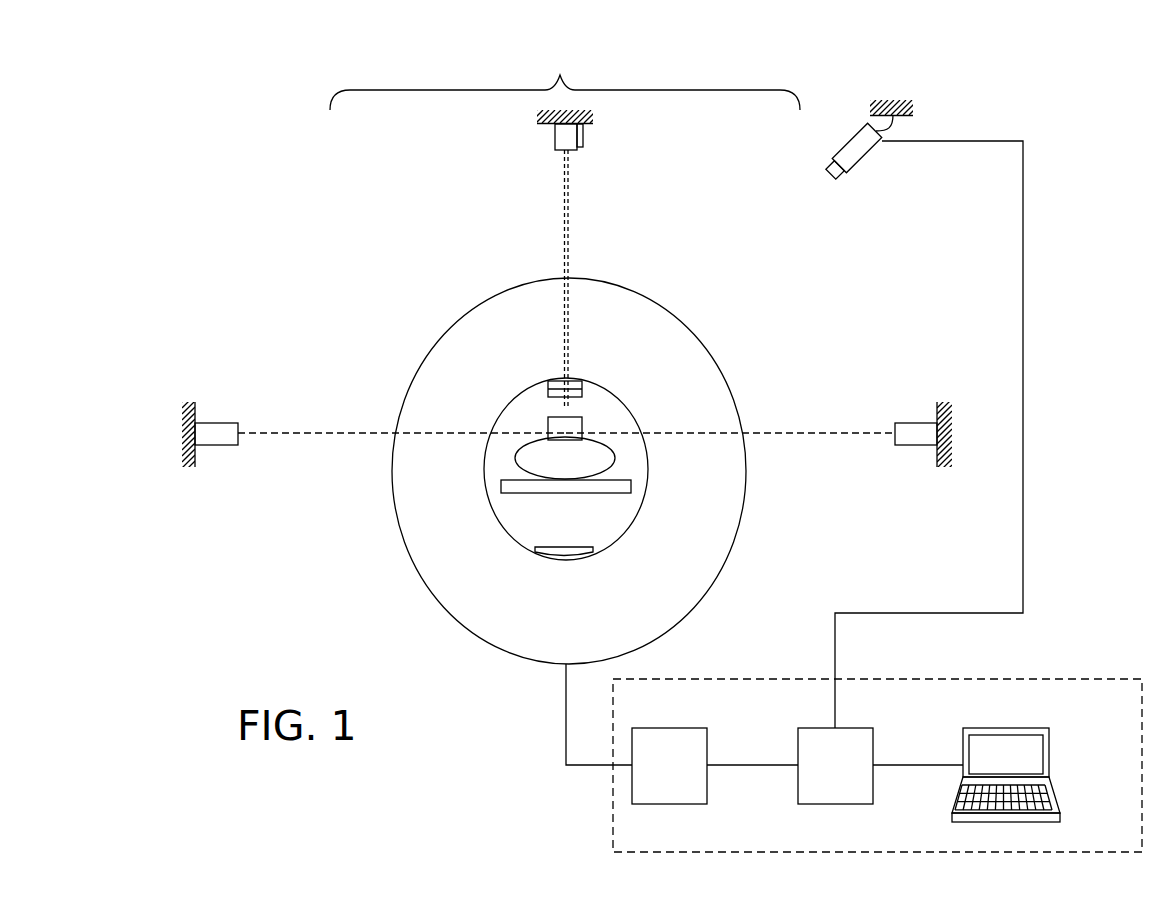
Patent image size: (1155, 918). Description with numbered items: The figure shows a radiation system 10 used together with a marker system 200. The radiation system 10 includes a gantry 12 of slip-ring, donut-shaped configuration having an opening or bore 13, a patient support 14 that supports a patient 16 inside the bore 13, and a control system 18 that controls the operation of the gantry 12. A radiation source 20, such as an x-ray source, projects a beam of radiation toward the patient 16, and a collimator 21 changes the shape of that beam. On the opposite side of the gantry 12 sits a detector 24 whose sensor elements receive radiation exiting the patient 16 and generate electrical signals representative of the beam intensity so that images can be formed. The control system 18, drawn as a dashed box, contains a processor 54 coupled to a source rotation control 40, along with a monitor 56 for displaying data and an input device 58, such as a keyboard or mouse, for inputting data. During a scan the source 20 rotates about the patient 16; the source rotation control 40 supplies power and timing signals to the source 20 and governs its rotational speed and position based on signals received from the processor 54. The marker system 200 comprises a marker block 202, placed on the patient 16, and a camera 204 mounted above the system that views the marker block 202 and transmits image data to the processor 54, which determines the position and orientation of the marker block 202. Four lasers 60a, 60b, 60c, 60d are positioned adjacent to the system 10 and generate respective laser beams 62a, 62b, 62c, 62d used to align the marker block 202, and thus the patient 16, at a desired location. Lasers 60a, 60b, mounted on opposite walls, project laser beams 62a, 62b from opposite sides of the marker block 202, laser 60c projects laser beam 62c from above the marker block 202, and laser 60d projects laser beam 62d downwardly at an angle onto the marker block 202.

The radiation system 10 is at (857, 299).
The gantry 12 is at (643, 295).
The opening (bore) 13 is at (605, 410).
The patient support 14 is at (620, 493).
The patient 16 is at (613, 437).
The control system 18 is at (932, 678).
The radiation source 20 is at (567, 381).
The collimator 21 is at (545, 393).
The detector 24 is at (557, 548).
The source rotation control 40 is at (669, 766).
The processor 54 is at (835, 766).
The monitor 56 is at (1045, 743).
The input device 58 is at (1057, 797).
The laser 60a is at (217, 423).
The laser 60b is at (915, 423).
The laser 60c is at (583, 137).
The laser 60d is at (558, 140).
The laser beam 62a is at (330, 435).
The laser beam 62b is at (842, 433).
The laser beam 62c is at (569, 225).
The laser beam 62d is at (563, 200).
The marker system 200 is at (565, 79).
The marker block 202 is at (547, 423).
The camera 204 is at (872, 152).